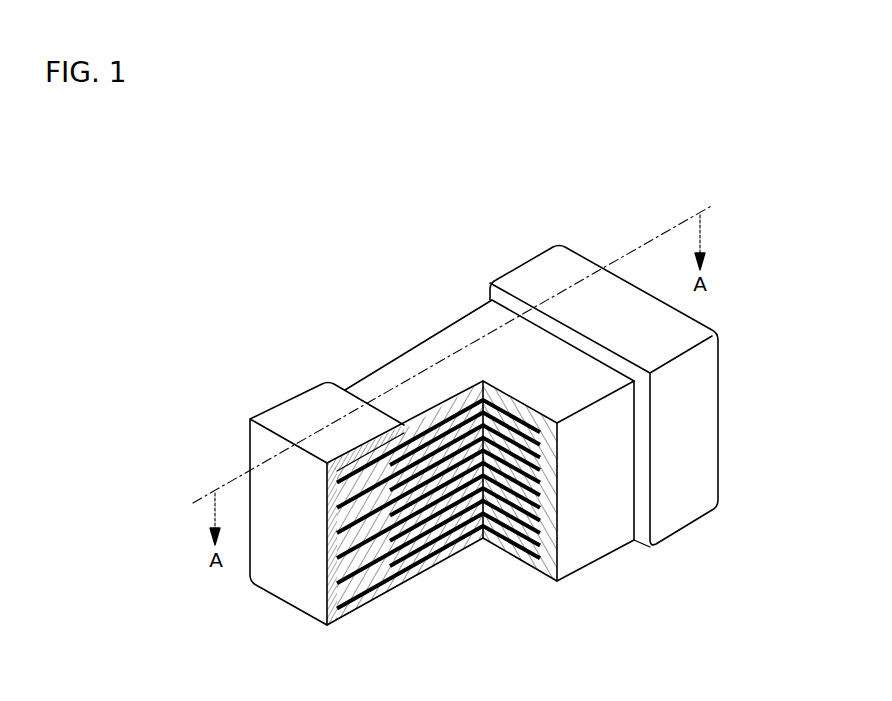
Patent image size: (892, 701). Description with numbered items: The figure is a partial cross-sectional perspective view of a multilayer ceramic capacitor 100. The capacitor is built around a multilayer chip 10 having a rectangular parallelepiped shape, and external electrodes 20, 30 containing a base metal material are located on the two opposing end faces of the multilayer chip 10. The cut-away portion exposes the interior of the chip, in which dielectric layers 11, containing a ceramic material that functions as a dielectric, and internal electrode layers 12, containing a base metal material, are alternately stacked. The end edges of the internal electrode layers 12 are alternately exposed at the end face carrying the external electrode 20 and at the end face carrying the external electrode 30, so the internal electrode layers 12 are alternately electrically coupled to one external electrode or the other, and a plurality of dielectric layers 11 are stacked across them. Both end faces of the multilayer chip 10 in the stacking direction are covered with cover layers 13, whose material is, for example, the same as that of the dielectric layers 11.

The multilayer ceramic capacitor 100 is at (796, 194).
The multilayer chip 10 is at (376, 371).
The dielectric layer 11 is at (437, 553).
The internal electrode layer 12 is at (396, 566).
The cover layer 13 is at (461, 333).
The external electrode 20 is at (298, 392).
The external electrode 30 is at (525, 268).